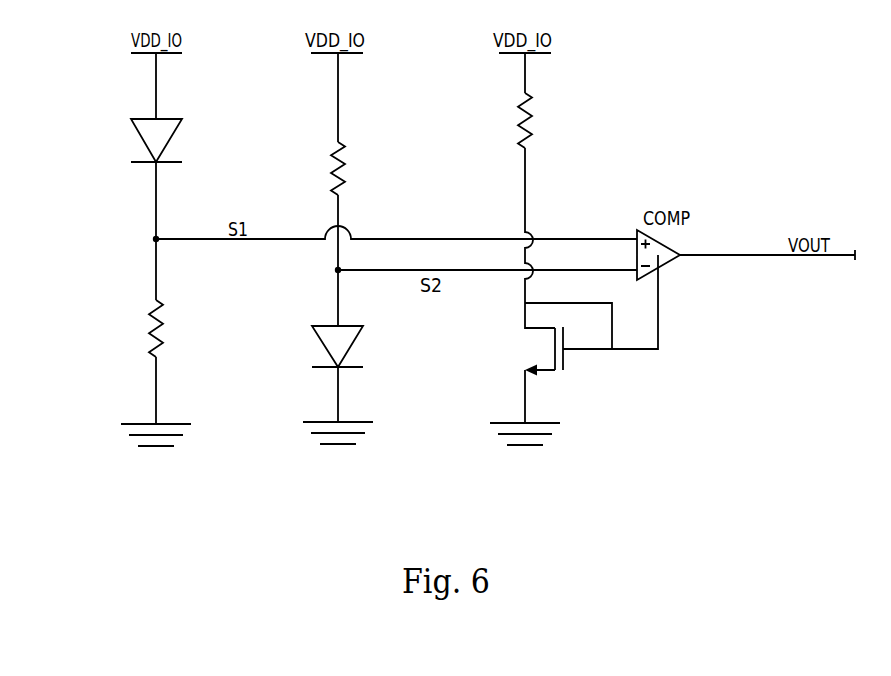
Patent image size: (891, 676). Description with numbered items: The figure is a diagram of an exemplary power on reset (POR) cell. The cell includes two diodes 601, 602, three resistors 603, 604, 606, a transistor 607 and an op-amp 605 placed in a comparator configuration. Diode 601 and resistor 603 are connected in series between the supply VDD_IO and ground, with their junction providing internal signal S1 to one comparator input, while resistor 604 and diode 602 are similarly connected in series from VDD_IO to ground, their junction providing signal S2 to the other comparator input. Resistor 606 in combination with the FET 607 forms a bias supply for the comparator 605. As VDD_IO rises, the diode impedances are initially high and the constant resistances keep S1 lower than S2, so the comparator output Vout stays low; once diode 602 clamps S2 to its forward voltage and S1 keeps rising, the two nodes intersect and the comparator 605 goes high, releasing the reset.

The diode 601 is at (143, 143).
The diode 602 is at (355, 343).
The resistor 603 is at (148, 334).
The resistor 604 is at (345, 160).
The op-amp 605 is at (668, 262).
The resistor 606 is at (533, 117).
The transistor 607 is at (567, 363).